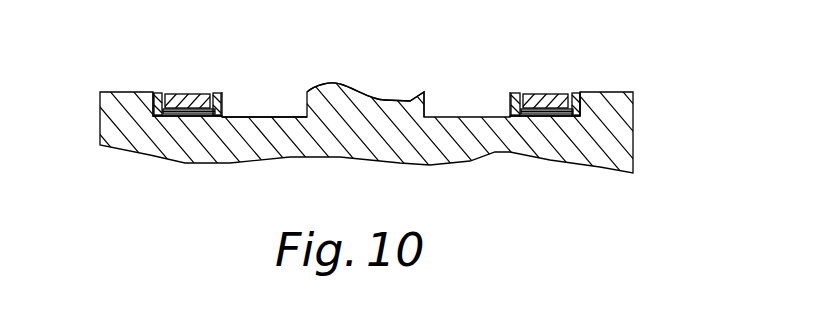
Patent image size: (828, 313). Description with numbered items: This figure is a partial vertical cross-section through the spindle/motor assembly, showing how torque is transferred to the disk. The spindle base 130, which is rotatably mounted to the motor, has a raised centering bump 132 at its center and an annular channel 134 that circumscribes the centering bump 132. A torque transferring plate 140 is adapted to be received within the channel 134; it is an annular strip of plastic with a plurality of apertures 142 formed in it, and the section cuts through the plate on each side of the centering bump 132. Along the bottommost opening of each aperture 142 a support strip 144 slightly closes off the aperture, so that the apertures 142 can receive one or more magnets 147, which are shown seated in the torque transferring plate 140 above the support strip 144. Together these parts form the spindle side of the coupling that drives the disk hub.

The spindle base 130 is at (645, 109).
The centering bump 132 is at (410, 100).
The annular channel 134 is at (271, 90).
The torque transferring plate 140 is at (233, 93).
The apertures 142 is at (157, 93).
The support strip 144 is at (168, 114).
The magnets 147 is at (168, 100).